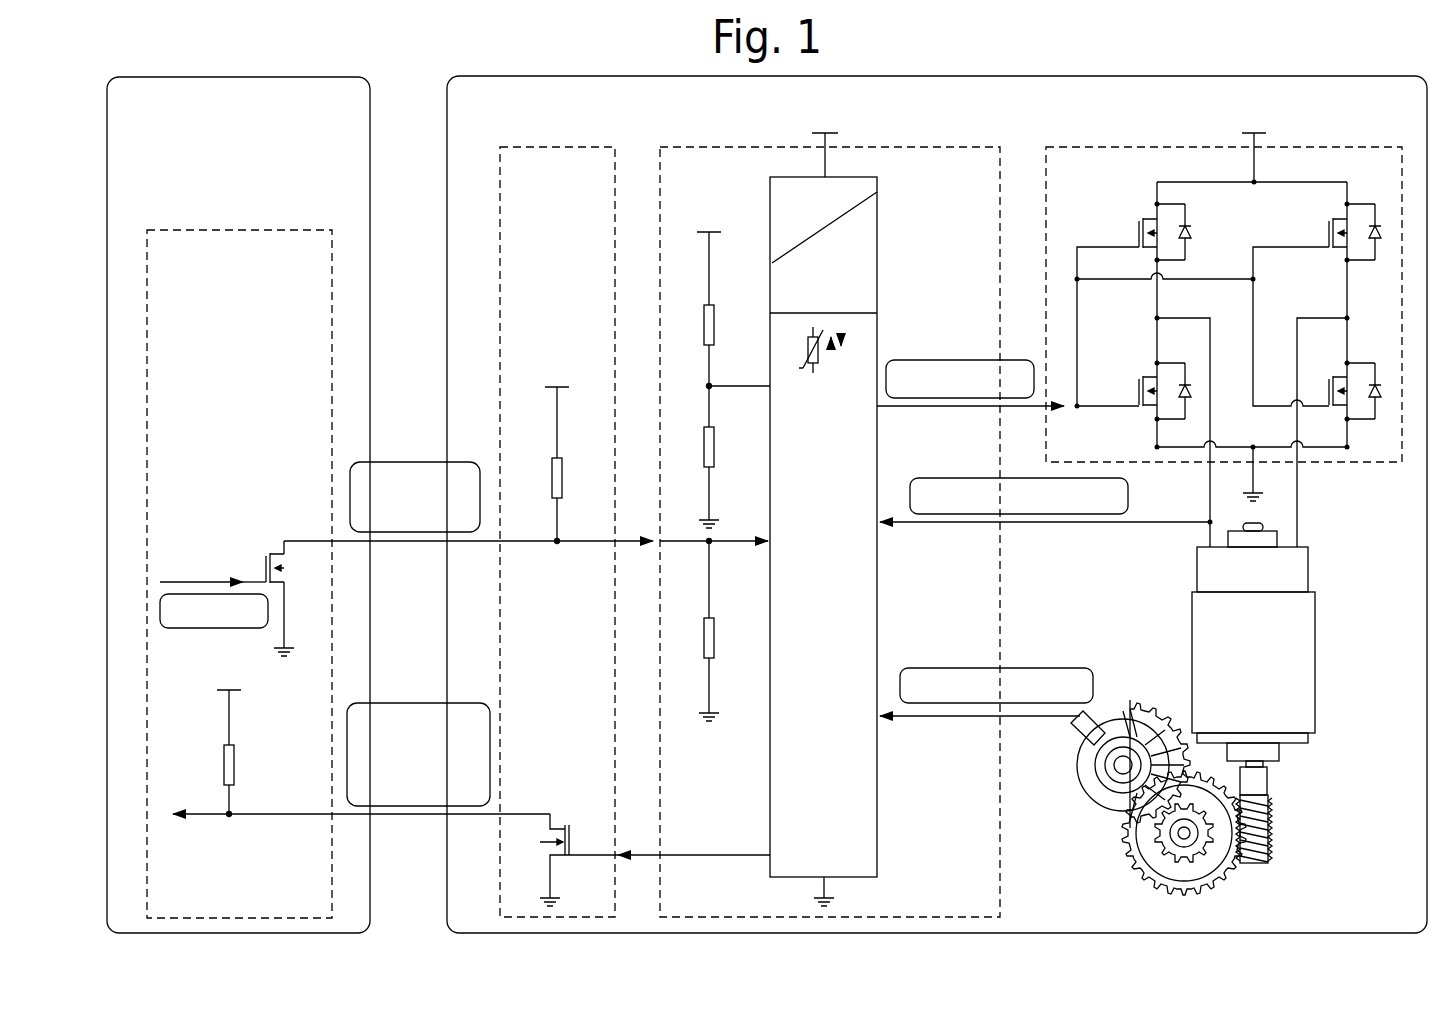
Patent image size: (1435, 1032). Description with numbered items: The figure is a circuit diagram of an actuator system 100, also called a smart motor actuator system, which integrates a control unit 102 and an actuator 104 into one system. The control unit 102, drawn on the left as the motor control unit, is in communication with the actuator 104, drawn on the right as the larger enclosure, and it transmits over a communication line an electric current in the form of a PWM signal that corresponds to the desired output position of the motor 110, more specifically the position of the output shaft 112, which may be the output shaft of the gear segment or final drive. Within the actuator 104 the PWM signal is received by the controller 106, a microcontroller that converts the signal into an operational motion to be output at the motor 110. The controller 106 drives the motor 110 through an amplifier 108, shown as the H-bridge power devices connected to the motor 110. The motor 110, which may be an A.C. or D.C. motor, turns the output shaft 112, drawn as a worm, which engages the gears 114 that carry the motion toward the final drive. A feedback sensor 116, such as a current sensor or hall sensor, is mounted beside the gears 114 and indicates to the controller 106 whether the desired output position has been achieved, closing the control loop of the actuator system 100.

The actuator system 100 is at (172, 52).
The control unit 102 is at (345, 76).
The actuator 104 is at (560, 76).
The controller 106 is at (697, 146).
The amplifier 108 is at (1163, 146).
The motor 110 is at (1297, 625).
The output shaft 112 is at (1262, 822).
The gears 114 is at (1204, 865).
The feedback sensor 116 is at (1095, 777).